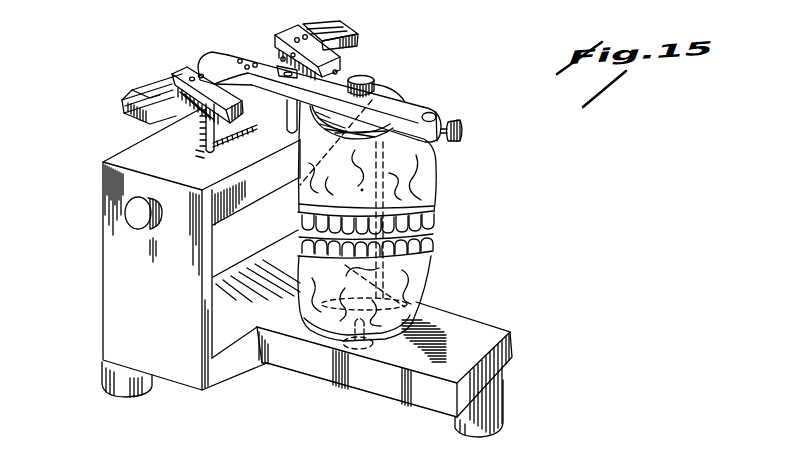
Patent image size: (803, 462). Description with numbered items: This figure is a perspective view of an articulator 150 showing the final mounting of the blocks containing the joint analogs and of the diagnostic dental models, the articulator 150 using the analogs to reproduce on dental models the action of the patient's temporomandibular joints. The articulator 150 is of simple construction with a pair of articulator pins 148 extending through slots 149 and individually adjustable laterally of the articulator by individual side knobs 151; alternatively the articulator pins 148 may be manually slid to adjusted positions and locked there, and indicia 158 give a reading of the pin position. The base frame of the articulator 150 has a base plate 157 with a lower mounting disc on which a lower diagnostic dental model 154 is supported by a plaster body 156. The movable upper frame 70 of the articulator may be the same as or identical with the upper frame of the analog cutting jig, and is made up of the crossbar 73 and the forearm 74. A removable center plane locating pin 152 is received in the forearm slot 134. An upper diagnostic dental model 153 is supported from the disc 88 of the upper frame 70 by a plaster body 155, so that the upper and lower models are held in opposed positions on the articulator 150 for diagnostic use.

The upper frame 70 is at (412, 92).
The crossbar 73 is at (124, 106).
The forearm 74 is at (350, 73).
The disc 88 is at (300, 160).
The forearm slot 134 is at (275, 52).
The articulator pins 148 is at (200, 134).
The slots 149 is at (208, 157).
The articulator 150 is at (100, 312).
The side knobs 151 is at (143, 228).
The center plane locating pin 152 is at (287, 116).
The upper diagnostic dental model 153 is at (440, 222).
The lower diagnostic dental model 154 is at (436, 238).
The plaster body 155 is at (438, 168).
The plaster body 156 is at (418, 287).
The base plate 157 is at (483, 322).
The indicia 158 is at (235, 140).